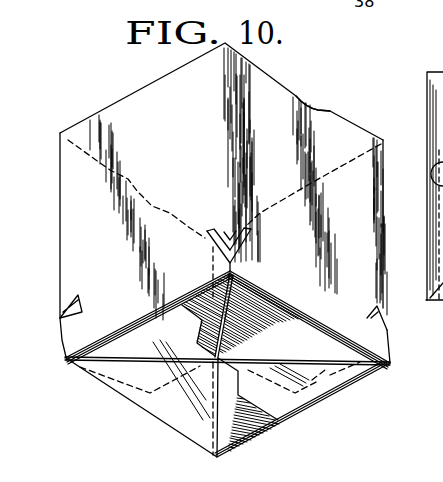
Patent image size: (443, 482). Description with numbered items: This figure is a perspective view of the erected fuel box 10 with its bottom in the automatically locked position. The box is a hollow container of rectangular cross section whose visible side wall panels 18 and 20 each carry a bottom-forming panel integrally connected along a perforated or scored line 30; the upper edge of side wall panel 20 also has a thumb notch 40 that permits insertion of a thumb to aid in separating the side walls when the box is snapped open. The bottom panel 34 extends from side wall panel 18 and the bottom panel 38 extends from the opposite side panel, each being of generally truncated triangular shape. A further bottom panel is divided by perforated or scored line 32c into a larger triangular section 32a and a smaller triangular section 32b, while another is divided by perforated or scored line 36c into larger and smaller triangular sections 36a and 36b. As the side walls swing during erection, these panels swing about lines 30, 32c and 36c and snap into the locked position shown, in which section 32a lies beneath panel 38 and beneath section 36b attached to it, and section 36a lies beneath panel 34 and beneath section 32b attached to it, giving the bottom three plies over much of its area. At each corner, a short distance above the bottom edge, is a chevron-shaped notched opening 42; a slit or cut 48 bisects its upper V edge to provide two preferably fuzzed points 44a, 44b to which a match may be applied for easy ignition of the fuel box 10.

The fuel box 10 is at (117, 99).
The side wall panel 18 is at (146, 160).
The side wall panel 20 is at (314, 177).
The perforated or scored line 30 is at (320, 325).
The larger triangular section 32a is at (163, 392).
The smaller triangular section 32b is at (157, 340).
The perforated or scored line 32c is at (97, 364).
The bottom panel 34 is at (200, 310).
The larger triangular section 36a is at (305, 288).
The smaller triangular section 36b is at (312, 382).
The perforated or scored line 36c is at (368, 375).
The bottom panel 38 is at (247, 420).
The thumb notch 40 is at (314, 105).
The notched opening 42 is at (240, 255).
The point 44a is at (213, 244).
The point 44b is at (250, 238).
The slit or cut 48 is at (228, 237).